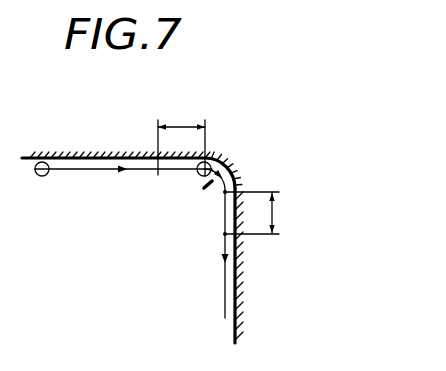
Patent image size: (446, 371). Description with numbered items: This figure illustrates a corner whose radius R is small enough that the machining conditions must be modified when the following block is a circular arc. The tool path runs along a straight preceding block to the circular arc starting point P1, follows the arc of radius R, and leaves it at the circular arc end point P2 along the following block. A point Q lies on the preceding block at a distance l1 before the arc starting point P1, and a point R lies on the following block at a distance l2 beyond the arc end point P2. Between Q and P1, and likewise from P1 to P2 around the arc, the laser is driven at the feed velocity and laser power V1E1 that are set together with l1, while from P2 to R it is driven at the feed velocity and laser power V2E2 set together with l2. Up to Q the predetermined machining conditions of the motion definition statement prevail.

The point Q is at (156, 157).
The distance l1 is at (181, 142).
The feed velocity V1 and laser power E1 V1E1 is at (199, 97).
The distance l2 is at (259, 213).
The feed velocity V2 and laser power E2 V2E2 is at (351, 215).
The circular arc starting point P1 is at (194, 177).
The circular arc end point P2 is at (223, 192).
The corner radius R is at (237, 176).